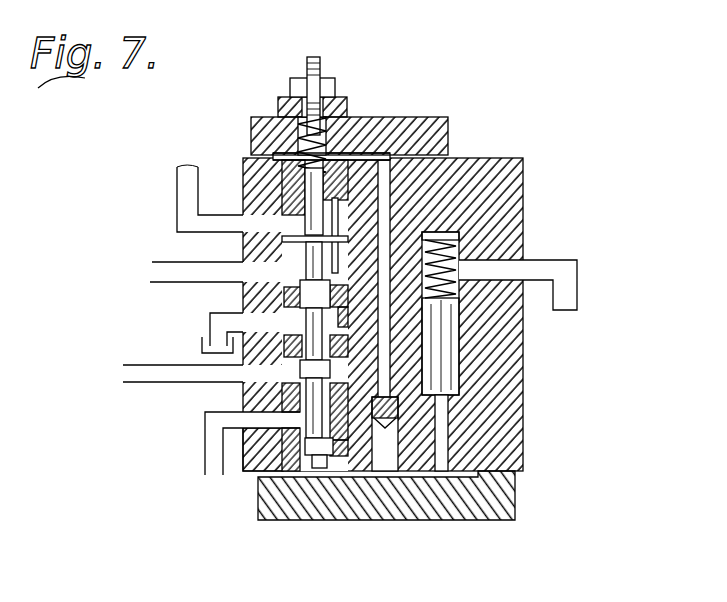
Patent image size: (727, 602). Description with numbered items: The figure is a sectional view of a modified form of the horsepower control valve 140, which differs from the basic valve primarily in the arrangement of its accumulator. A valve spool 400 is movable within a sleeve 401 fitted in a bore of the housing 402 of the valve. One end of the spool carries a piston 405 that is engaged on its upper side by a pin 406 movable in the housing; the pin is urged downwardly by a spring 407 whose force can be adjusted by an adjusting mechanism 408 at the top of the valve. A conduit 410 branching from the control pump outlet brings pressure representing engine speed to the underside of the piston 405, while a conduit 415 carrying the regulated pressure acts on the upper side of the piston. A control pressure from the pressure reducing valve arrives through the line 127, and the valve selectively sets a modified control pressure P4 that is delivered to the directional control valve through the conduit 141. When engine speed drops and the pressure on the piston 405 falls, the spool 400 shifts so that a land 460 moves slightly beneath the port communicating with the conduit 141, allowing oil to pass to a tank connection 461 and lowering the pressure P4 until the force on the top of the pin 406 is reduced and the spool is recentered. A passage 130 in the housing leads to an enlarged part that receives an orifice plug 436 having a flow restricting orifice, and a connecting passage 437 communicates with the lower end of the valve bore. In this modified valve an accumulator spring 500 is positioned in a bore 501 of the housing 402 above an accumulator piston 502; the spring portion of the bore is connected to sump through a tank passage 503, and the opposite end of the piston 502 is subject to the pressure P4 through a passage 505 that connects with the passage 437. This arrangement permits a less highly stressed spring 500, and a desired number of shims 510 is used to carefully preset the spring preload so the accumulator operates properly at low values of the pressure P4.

The horsepower control valve 140 is at (527, 138).
The housing 402 is at (470, 157).
The adjusting mechanism 408 is at (333, 97).
The spring 407 is at (340, 138).
The pin 406 is at (307, 192).
The conduit 415 is at (183, 187).
The piston 405 is at (283, 253).
The conduit 410 is at (160, 276).
The tank connection 461 is at (228, 316).
The conduit 141 is at (142, 382).
The land 460 is at (305, 367).
The line 127 is at (207, 465).
The valve spool 400 is at (314, 466).
The sleeve 401 is at (352, 452).
The modified control pressure P4 is at (383, 474).
The orifice plug 436 is at (389, 422).
The connecting passage 437 is at (469, 479).
The passage 130 is at (392, 223).
The shims 510 is at (460, 238).
The accumulator spring 500 is at (458, 249).
The bore 501 is at (456, 292).
The accumulator piston 502 is at (447, 365).
The tank passage 503 is at (550, 272).
The passage 505 is at (443, 425).